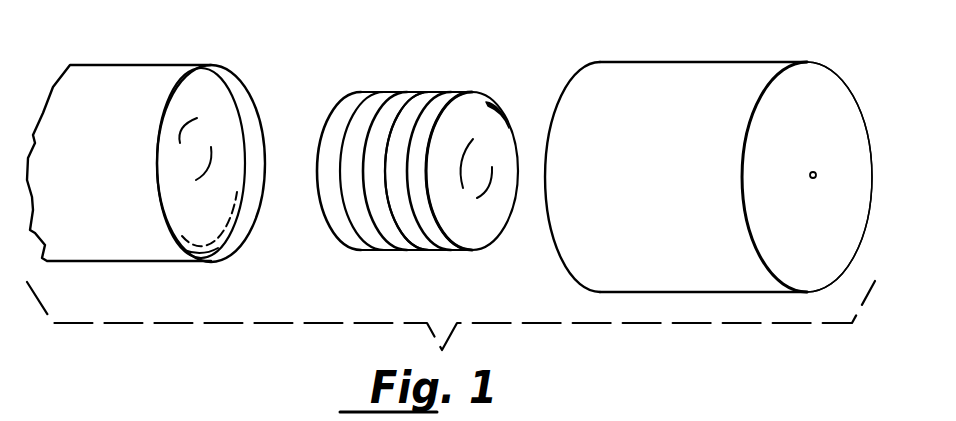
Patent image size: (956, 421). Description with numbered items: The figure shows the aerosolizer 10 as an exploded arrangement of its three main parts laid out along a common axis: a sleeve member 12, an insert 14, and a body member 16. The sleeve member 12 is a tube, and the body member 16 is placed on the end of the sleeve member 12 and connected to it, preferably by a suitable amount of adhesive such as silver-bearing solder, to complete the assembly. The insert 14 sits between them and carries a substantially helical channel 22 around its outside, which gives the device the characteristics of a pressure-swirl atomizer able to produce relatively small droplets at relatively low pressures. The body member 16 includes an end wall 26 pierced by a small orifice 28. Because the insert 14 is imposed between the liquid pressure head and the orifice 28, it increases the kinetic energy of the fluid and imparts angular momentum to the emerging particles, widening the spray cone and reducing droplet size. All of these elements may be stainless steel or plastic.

The aerosolizer 10 is at (532, 54).
The sleeve member 12 is at (145, 73).
The insert 14 is at (406, 92).
The body member 16 is at (718, 75).
The helical channel 22 is at (440, 243).
The end wall 26 is at (795, 100).
The orifice 28 is at (815, 172).